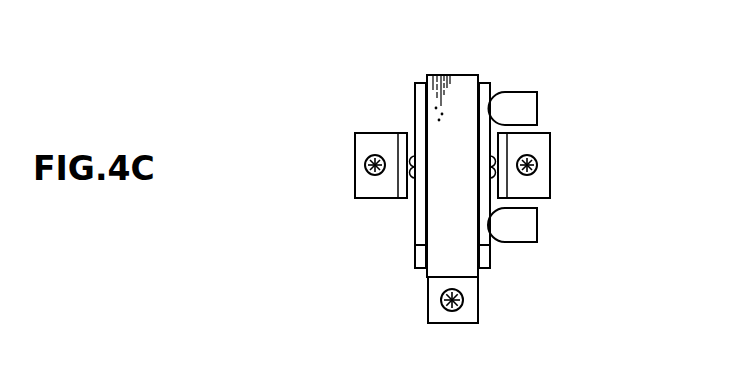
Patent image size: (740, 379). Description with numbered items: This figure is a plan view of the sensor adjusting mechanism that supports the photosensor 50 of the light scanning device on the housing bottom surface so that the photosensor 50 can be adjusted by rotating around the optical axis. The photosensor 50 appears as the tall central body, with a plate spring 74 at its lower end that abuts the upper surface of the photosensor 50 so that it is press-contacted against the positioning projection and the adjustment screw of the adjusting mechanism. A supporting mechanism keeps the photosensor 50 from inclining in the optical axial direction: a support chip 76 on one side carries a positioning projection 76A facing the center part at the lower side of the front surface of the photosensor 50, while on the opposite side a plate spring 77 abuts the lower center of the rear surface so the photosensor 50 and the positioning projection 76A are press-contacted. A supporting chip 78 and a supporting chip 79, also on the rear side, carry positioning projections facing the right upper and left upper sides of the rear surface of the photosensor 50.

The photosensor 50 is at (490, 83).
The plate spring 74 is at (463, 257).
The support chip 76 is at (370, 198).
The positioning projection 76A is at (415, 150).
The plate spring 77 is at (550, 165).
The supporting chip 78 is at (537, 225).
The supporting chip 79 is at (537, 108).